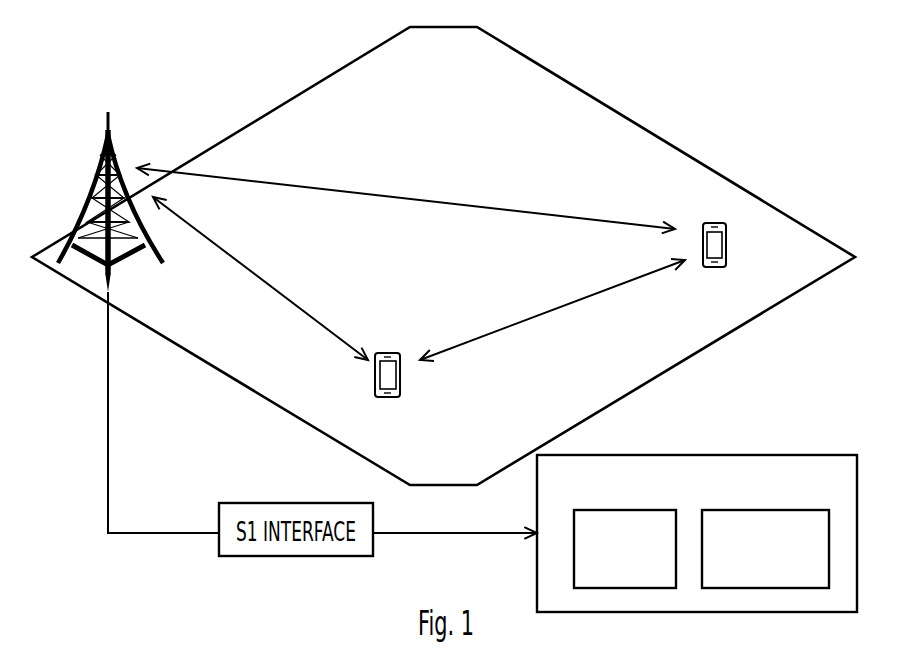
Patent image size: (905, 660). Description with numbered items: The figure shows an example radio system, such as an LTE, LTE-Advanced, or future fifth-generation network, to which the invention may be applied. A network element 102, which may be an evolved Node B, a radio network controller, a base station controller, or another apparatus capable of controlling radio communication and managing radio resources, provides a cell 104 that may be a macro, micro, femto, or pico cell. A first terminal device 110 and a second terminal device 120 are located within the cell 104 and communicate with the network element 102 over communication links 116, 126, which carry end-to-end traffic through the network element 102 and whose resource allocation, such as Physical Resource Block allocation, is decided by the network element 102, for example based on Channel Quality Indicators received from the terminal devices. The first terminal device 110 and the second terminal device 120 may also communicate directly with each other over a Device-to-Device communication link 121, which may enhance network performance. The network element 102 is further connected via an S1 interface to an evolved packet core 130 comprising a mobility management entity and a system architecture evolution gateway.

The network element 102 is at (105, 140).
The cell 104 is at (75, 285).
The first terminal device 110 is at (386, 397).
The communication link 116 is at (292, 302).
The second terminal device 120 is at (713, 267).
The D2D communication link 121 is at (540, 316).
The communication link 126 is at (422, 200).
The evolved packet core 130 is at (583, 496).